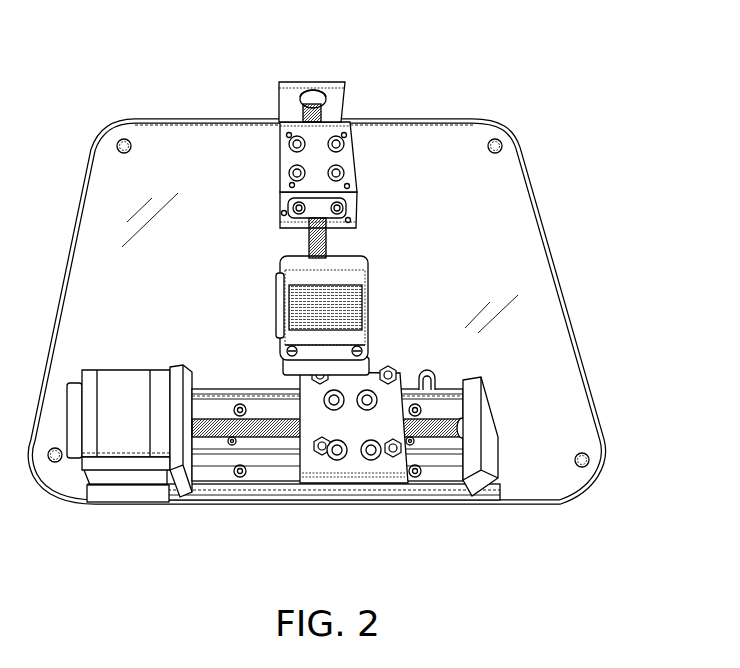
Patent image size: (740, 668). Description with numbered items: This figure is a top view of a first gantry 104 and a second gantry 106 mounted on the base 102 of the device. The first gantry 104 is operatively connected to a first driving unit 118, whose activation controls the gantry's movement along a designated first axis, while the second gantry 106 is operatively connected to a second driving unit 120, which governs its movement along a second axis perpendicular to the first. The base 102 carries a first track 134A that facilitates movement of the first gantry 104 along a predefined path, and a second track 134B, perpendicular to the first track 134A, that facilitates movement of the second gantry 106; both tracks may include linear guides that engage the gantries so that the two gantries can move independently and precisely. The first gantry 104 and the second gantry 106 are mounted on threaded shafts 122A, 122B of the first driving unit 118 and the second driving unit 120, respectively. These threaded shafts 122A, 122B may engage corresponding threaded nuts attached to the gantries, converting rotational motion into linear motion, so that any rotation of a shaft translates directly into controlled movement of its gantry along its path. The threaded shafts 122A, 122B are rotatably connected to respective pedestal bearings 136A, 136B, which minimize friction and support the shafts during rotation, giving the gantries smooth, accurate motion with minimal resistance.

The base 102 is at (452, 117).
The first gantry 104 is at (357, 147).
The second gantry 106 is at (382, 483).
The first driving unit 118 is at (360, 338).
The second driving unit 120 is at (122, 441).
The threaded shaft 122A is at (327, 248).
The threaded shaft 122B is at (270, 441).
The first track 134A is at (357, 227).
The second track 134B is at (447, 477).
The pedestal bearing 136A is at (313, 88).
The pedestal bearing 136B is at (472, 430).